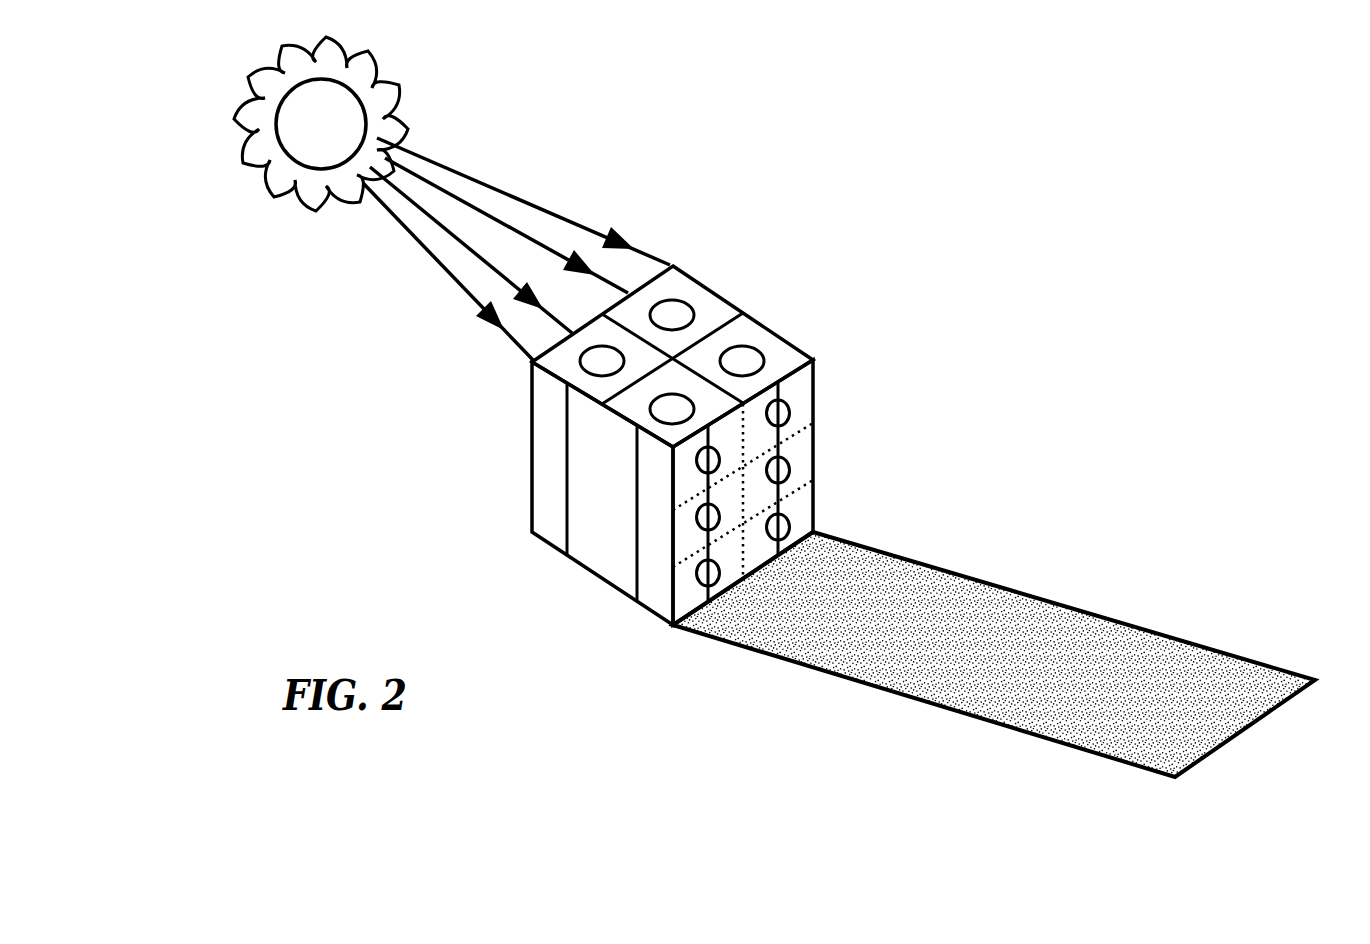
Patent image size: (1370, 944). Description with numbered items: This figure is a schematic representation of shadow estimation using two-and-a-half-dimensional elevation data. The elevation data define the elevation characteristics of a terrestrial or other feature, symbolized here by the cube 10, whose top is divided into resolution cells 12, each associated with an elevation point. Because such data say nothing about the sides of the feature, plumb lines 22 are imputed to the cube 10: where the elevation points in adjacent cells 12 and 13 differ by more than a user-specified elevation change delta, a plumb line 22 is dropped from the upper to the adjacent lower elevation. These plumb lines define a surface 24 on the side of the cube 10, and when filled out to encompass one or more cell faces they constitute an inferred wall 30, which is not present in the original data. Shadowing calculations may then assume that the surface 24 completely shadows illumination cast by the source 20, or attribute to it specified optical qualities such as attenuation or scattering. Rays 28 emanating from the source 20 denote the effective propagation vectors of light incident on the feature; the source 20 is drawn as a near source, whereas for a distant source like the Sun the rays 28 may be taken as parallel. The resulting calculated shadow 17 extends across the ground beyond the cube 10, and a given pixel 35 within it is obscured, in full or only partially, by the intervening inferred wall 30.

The cube 10 is at (550, 433).
The resolution cell 12 is at (713, 315).
The adjacent cell 13 is at (783, 365).
The calculated shadow 17 is at (1013, 590).
The source 20 is at (336, 139).
The plumb line 22 is at (795, 448).
The surface 24 is at (800, 388).
The rays 28 is at (551, 212).
The inferred wall 30 is at (800, 467).
The pixel 35 is at (1202, 680).